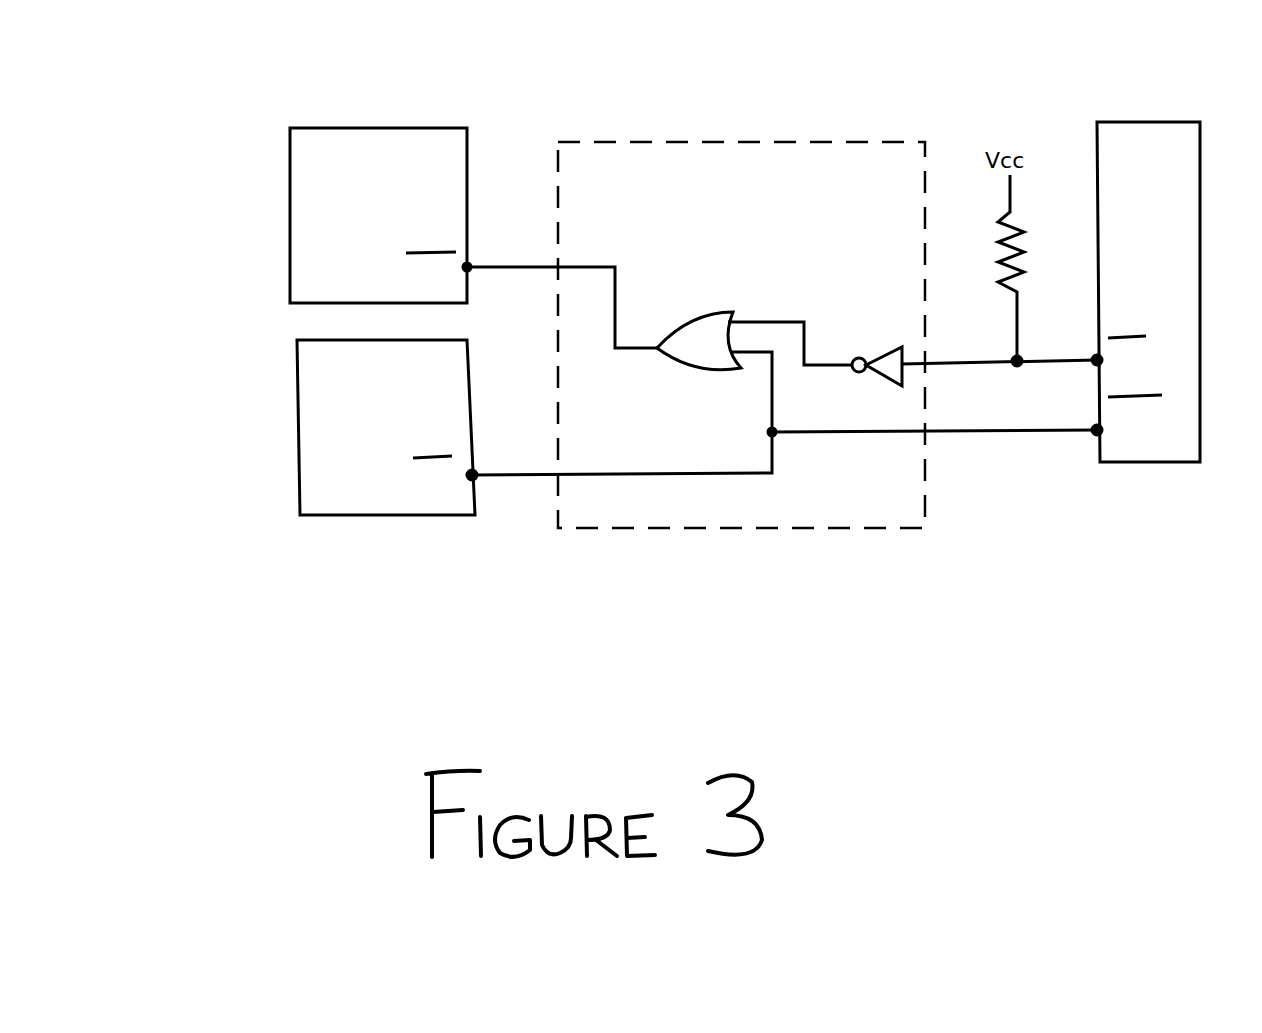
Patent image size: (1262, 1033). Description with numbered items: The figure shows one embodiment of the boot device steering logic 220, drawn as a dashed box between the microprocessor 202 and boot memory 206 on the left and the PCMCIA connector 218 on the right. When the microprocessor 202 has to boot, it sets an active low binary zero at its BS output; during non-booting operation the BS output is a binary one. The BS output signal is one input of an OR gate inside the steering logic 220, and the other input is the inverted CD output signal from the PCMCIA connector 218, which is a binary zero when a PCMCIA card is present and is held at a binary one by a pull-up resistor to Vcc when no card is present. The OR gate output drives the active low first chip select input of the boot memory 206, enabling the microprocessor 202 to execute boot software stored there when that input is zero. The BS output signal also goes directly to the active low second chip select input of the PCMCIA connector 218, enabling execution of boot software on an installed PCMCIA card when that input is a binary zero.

The boot memory 206 is at (290, 200).
The microprocessor 202 is at (297, 425).
The boot device steering logic 220 is at (787, 102).
The PCMCIA connector 218 is at (1137, 122).